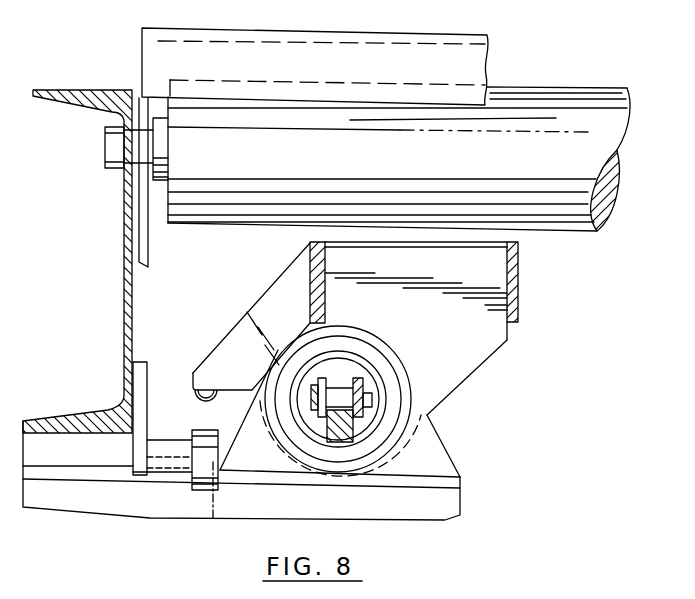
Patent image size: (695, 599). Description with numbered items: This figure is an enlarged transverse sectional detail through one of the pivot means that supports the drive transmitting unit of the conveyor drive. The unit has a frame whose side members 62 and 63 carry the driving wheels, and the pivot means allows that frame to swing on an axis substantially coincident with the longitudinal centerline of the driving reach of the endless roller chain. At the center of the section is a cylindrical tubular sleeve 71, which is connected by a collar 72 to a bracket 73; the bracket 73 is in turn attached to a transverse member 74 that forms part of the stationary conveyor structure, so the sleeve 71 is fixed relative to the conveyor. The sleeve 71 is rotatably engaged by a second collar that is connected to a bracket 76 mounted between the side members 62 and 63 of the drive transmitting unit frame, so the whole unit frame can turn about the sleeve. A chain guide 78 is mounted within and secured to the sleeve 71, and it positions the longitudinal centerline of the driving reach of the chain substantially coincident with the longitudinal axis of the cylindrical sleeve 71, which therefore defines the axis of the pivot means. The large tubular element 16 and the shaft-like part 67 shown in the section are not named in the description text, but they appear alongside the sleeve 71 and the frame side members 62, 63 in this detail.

The tubular member 16 is at (617, 181).
The frame side member 62 is at (519, 317).
The frame side member 63 is at (308, 287).
The shaft 67 is at (322, 380).
The cylindrical tubular sleeve 71 is at (388, 382).
The collar 72 is at (390, 352).
The bracket 73 is at (383, 408).
The transverse member 74 is at (462, 503).
The bracket 76 is at (489, 359).
The chain guide 78 is at (347, 428).